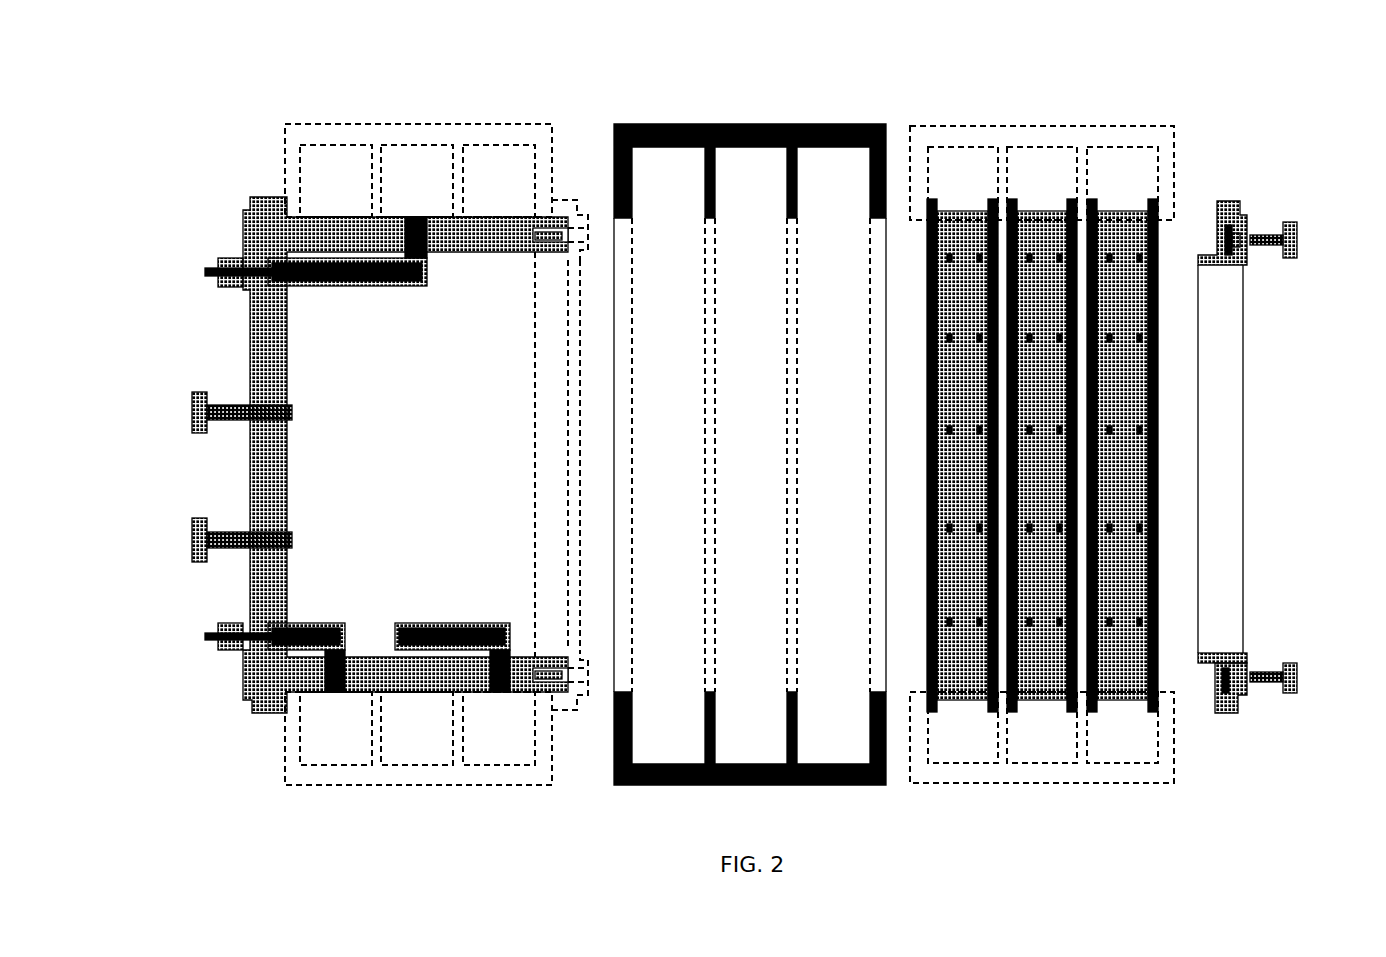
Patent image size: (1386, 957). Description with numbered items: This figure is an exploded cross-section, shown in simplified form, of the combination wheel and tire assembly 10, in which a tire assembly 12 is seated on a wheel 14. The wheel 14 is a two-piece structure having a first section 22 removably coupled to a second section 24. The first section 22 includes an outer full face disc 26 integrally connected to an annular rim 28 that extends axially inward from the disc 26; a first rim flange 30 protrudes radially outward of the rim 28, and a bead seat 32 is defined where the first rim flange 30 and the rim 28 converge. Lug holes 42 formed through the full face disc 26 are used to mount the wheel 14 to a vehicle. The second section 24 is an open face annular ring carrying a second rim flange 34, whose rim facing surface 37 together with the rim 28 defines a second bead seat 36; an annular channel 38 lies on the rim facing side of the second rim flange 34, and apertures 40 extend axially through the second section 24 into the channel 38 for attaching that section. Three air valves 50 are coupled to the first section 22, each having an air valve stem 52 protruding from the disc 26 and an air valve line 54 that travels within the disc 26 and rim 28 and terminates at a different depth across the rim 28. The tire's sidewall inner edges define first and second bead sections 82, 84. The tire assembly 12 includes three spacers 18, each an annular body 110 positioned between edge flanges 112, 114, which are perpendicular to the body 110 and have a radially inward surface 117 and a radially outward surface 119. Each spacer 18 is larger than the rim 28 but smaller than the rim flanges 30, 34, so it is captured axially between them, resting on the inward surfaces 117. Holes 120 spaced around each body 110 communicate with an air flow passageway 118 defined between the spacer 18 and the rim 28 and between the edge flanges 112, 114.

The combination wheel and tire assembly 10 is at (1250, 86).
The tire assembly 12 is at (770, 106).
The wheel 14 is at (205, 713).
The spacer 18 is at (1095, 461).
The first section 22 is at (240, 476).
The second section 24 is at (1246, 435).
The full face disc 26 is at (262, 345).
The annular rim 28 is at (330, 235).
The first rim flange 30 is at (262, 228).
The bead seat 32 is at (285, 215).
The second rim flange 34 is at (1245, 222).
The bead seat 36 is at (1205, 258).
The rim facing surface 37 is at (1215, 218).
The annular channel 38 is at (1222, 238).
The apertures 40 is at (1237, 240).
The lug holes 42 is at (288, 410).
The air valve 50 is at (380, 298).
The air valve stem 52 is at (210, 282).
The air valve line 54 is at (418, 287).
The first bead section 82 is at (613, 216).
The second bead section 84 is at (890, 214).
The body 110 is at (1118, 680).
The edge flange 112 is at (1087, 655).
The edge flange 114 is at (1157, 680).
The radially inward surface 117 is at (1157, 580).
The air flow passageway 118 is at (1118, 244).
The radially outward surface 119 is at (1157, 555).
The holes 120 is at (1058, 255).